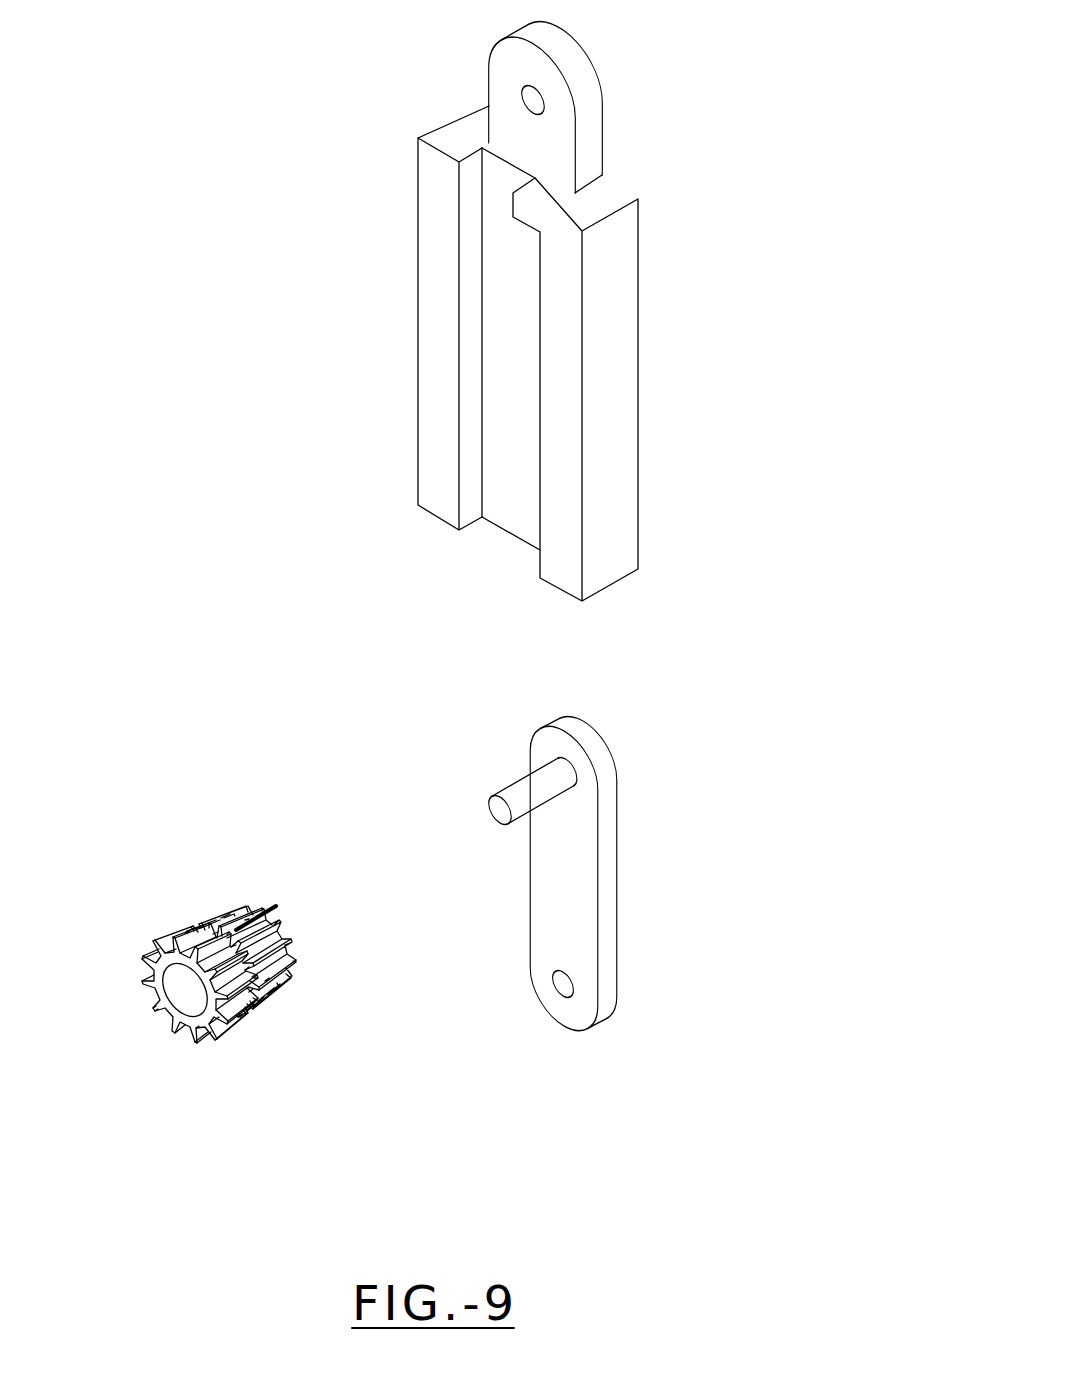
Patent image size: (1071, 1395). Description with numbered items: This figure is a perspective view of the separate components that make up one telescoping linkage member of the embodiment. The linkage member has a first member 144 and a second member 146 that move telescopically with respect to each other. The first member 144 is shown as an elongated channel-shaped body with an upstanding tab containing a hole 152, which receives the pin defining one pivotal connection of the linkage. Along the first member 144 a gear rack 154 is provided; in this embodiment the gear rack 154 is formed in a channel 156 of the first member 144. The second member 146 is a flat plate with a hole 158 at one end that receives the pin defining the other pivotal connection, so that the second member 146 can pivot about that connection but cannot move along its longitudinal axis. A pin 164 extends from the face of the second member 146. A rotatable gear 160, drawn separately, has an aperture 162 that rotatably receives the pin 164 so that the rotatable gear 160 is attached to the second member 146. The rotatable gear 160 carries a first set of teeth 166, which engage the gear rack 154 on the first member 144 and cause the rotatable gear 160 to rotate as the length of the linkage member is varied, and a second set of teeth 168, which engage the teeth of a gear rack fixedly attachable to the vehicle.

The first member 144 is at (508, 302).
The hole 152 is at (533, 102).
The gear rack 154 is at (542, 392).
The channel 156 is at (462, 370).
The second member 146 is at (579, 897).
The hole 158 is at (563, 982).
The pin 164 is at (498, 810).
The rotatable gear 160 is at (182, 949).
The aperture 162 is at (185, 990).
The first set of teeth 166 is at (271, 912).
The second set of teeth 168 is at (250, 1008).